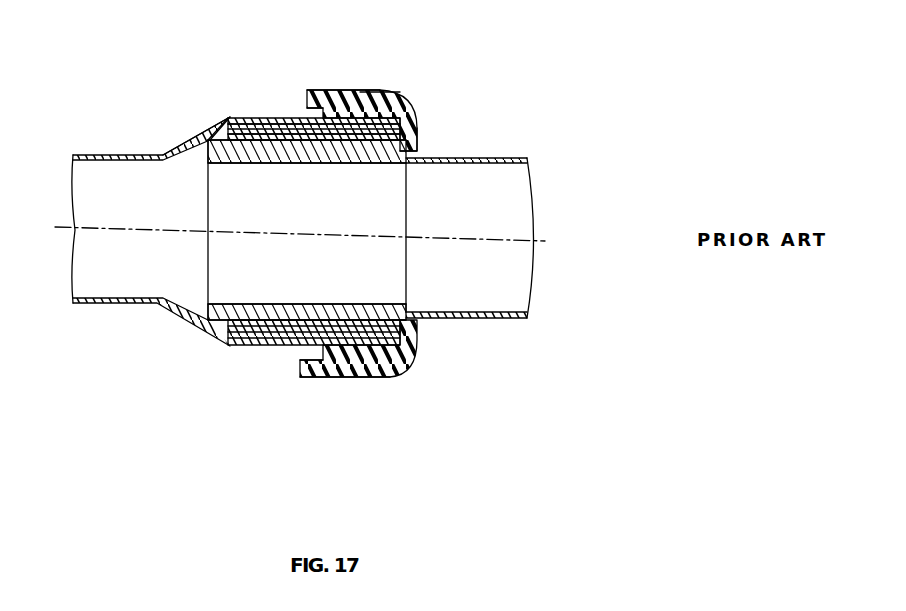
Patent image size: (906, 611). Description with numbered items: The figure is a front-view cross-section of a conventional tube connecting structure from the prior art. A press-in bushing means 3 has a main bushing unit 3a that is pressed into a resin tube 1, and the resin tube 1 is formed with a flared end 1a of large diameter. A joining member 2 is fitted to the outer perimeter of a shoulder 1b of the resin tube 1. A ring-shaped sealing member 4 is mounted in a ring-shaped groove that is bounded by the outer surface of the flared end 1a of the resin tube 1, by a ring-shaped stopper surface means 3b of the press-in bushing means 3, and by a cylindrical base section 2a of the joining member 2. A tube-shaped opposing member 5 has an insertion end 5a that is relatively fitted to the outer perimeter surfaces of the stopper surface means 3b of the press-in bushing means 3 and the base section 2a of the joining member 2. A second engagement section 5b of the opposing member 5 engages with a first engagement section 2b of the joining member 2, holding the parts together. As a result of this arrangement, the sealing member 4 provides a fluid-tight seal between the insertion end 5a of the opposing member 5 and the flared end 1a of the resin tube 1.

The resin tube 1 is at (512, 152).
The flared end 1a is at (257, 142).
The shoulder 1b is at (419, 134).
The joining member 2 is at (426, 104).
The cylindrical base section 2a is at (362, 142).
The first engagement section 2b is at (338, 91).
The press-in bushing means 3 is at (200, 182).
The main bushing unit 3a is at (281, 162).
The ring-shaped stopper surface means 3b is at (225, 119).
The ring-shaped sealing member 4 is at (285, 117).
The tube-shaped opposing member 5 is at (82, 150).
The insertion end 5a is at (242, 114).
The second engagement section 5b is at (381, 95).